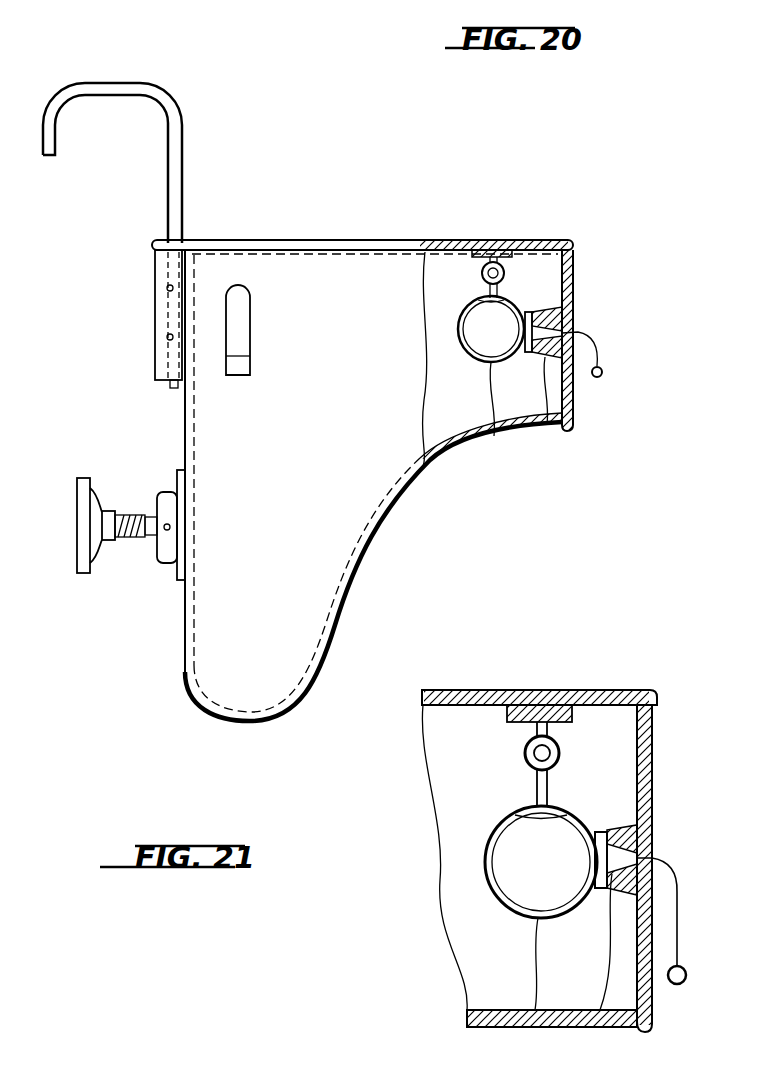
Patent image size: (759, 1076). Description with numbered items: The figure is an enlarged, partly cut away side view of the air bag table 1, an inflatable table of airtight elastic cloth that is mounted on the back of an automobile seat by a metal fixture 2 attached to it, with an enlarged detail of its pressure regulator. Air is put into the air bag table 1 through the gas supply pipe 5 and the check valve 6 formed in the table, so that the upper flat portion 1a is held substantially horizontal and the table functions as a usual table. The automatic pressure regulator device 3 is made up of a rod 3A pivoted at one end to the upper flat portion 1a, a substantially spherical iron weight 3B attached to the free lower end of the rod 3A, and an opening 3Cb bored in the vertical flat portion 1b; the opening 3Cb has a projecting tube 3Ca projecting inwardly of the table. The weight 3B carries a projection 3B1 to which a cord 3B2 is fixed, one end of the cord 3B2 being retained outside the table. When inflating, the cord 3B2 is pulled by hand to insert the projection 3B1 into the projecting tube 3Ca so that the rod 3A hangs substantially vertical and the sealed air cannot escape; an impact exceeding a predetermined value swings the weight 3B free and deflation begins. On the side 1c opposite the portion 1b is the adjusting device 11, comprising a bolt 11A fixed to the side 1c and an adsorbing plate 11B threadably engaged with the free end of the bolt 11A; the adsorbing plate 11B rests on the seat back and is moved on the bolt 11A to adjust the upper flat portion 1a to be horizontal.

In FIG. 20, the air bag table 1 is at (386, 457).
In FIG. 21, the air bag table 1 is at (561, 837).
In FIG. 20, the upper flat portion 1a is at (420, 243).
In FIG. 21, the upper flat portion 1a is at (526, 690).
In FIG. 20, the vertical flat portion 1b is at (574, 410).
In FIG. 21, the vertical flat portion 1b is at (653, 1005).
In FIG. 20, the side of the air bag table 1c is at (184, 630).
In FIG. 20, the fixture 2 is at (183, 132).
In FIG. 20, the pressure regulator device 3 is at (557, 342).
In FIG. 21, the pressure regulator device 3 is at (590, 860).
In FIG. 20, the rod 3A is at (480, 270).
In FIG. 21, the rod 3A is at (525, 755).
In FIG. 20, the spherical weight 3B is at (494, 437).
In FIG. 21, the spherical weight 3B is at (535, 1012).
In FIG. 20, the projection 3B1 is at (548, 426).
In FIG. 21, the projection 3B1 is at (600, 1012).
In FIG. 20, the cord 3B2 is at (604, 376).
In FIG. 21, the cord 3B2 is at (678, 922).
In FIG. 20, the projecting tube 3Ca is at (564, 315).
In FIG. 21, the projecting tube 3Ca is at (636, 836).
In FIG. 20, the opening 3Cb is at (545, 333).
In FIG. 21, the opening 3Cb is at (640, 858).
In FIG. 20, the gas supply pipe 5 is at (251, 333).
In FIG. 20, the check valve 6 is at (251, 366).
In FIG. 20, the adjusting device 11 is at (110, 520).
In FIG. 20, the bolt 11A is at (150, 545).
In FIG. 20, the adsorbing plate 11B is at (80, 484).